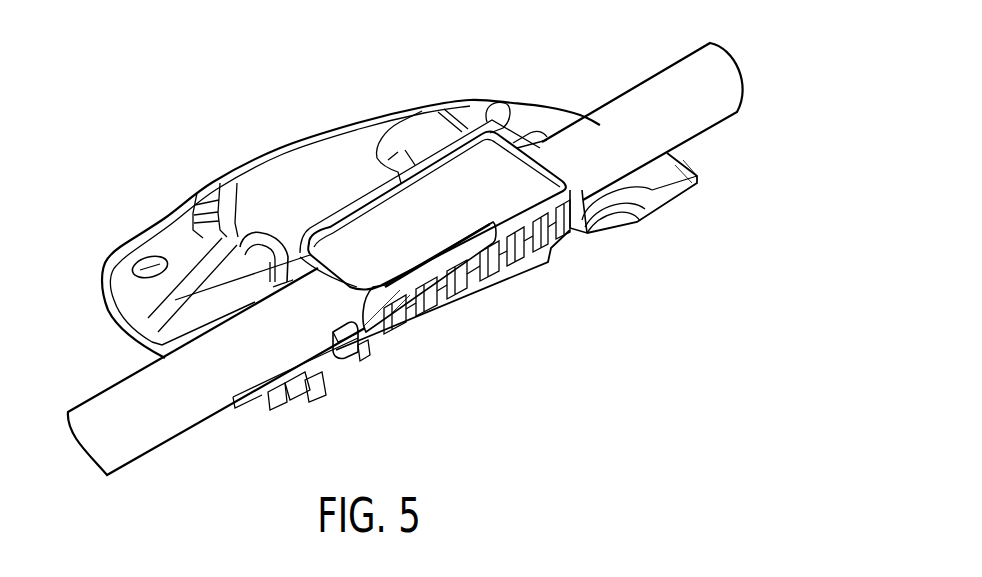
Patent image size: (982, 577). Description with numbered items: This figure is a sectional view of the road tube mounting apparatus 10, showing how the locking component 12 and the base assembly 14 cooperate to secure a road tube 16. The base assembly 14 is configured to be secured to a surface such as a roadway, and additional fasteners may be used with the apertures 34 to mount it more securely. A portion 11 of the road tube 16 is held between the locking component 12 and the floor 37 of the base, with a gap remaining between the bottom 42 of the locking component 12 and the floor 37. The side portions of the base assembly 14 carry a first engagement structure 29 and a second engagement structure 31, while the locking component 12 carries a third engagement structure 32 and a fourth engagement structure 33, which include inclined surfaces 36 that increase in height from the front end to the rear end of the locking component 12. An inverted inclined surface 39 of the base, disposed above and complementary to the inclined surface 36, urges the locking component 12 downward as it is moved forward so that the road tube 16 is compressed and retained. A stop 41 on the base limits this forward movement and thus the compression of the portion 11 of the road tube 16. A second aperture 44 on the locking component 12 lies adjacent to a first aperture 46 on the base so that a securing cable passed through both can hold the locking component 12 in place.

The road tube mounting apparatus 10 is at (410, 265).
The portion of road tube 11 is at (333, 368).
The locking component 12 is at (433, 175).
The base assembly 14 is at (334, 258).
The road tube 16 is at (642, 108).
The first engagement structure 29 is at (442, 326).
The second engagement structure 31 is at (220, 229).
The third engagement structure 32 is at (516, 251).
The fourth engagement structure 33 is at (435, 97).
The apertures 34 is at (135, 226).
The inclined surface 36 is at (470, 225).
The floor 37 is at (393, 351).
The inverted inclined surface 39 is at (410, 331).
The stop 41 is at (289, 404).
The bottom of locking component 42 is at (488, 277).
The second aperture 44 is at (373, 377).
The first aperture 46 is at (269, 422).